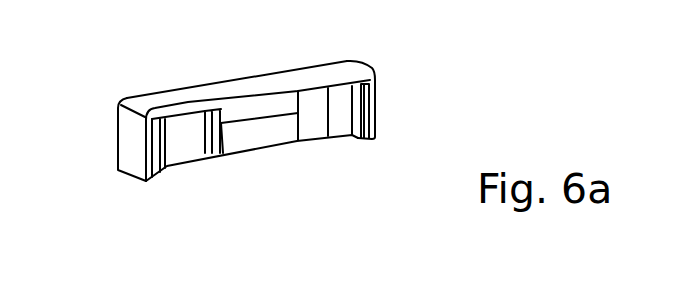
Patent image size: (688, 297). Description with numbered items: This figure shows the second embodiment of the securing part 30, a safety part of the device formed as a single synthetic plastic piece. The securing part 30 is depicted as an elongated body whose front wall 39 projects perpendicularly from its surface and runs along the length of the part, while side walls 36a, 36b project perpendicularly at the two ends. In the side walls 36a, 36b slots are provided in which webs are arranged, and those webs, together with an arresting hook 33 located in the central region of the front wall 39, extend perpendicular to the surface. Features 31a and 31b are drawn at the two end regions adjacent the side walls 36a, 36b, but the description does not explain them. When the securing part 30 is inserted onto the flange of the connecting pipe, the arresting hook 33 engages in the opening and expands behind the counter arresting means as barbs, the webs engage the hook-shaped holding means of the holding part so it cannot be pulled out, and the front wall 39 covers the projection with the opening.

The securing part 30 is at (399, 115).
The left tab 31a is at (156, 178).
The right tab 31b is at (363, 139).
The arresting hook 33 is at (260, 138).
The side wall 36a is at (132, 145).
The side wall 36b is at (371, 93).
The front wall 39 is at (188, 109).